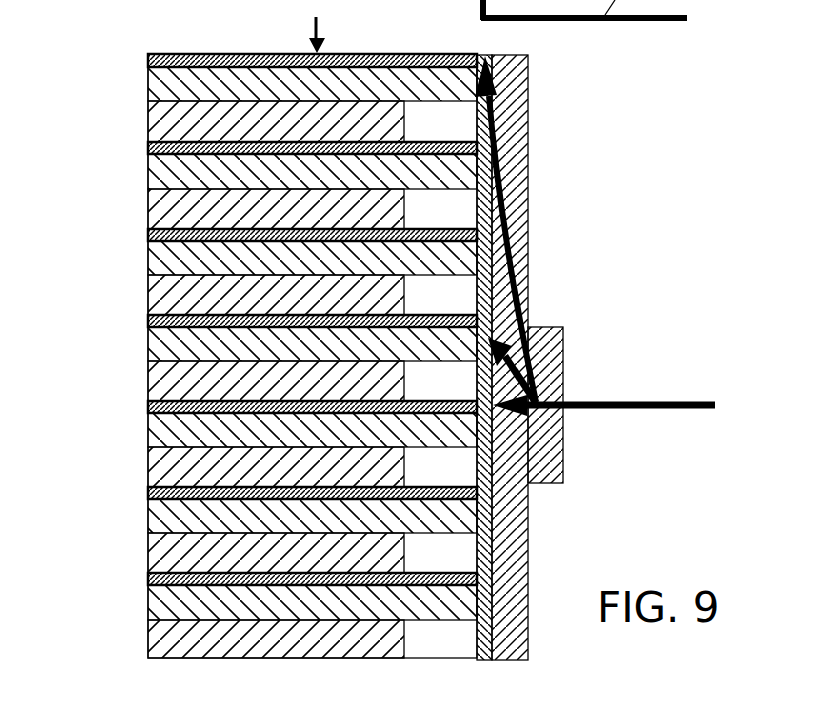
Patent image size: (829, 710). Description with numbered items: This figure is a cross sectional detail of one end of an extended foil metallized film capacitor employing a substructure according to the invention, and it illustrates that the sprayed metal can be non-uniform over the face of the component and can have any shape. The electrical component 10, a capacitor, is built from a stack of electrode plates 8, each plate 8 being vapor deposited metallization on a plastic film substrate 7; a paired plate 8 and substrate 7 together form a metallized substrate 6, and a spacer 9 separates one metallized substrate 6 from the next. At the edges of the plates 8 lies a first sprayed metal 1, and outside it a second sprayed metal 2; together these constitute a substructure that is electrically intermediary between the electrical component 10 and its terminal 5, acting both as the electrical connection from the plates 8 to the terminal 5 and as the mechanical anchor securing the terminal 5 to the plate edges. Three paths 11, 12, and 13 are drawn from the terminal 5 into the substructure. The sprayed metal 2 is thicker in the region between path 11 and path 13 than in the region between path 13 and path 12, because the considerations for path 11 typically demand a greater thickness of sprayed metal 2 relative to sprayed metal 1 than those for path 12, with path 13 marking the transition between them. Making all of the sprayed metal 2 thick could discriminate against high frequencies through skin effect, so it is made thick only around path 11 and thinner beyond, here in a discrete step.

The sprayed metal 1 is at (480, 655).
The second sprayed metal 2 is at (545, 483).
The terminal 5 is at (700, 402).
The metallized substrate 6 is at (138, 62).
The plastic film substrate 7 is at (148, 95).
The electrode plate 8 is at (220, 54).
The spacer 9 is at (148, 122).
The electrical component 10 is at (316, 26).
The path 11 is at (542, 425).
The path 12 is at (523, 232).
The path 13 is at (563, 390).